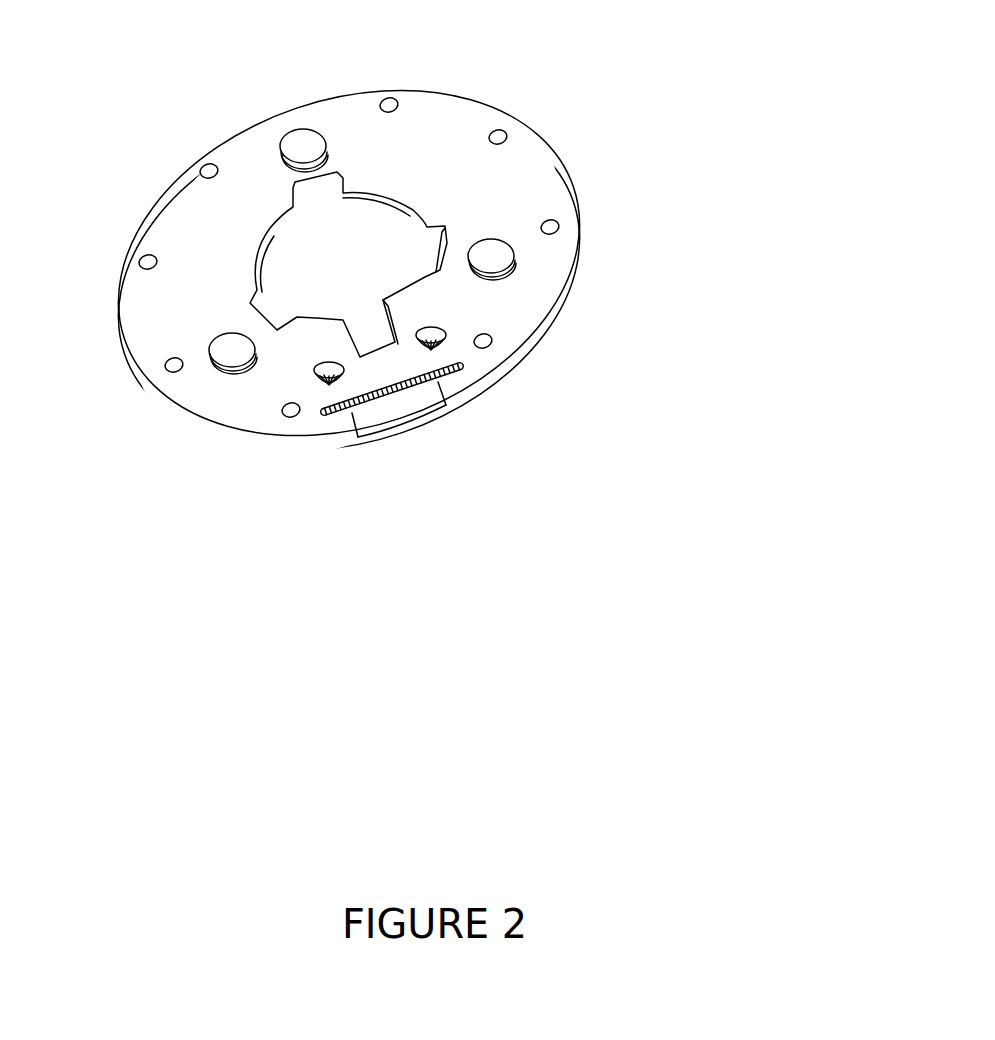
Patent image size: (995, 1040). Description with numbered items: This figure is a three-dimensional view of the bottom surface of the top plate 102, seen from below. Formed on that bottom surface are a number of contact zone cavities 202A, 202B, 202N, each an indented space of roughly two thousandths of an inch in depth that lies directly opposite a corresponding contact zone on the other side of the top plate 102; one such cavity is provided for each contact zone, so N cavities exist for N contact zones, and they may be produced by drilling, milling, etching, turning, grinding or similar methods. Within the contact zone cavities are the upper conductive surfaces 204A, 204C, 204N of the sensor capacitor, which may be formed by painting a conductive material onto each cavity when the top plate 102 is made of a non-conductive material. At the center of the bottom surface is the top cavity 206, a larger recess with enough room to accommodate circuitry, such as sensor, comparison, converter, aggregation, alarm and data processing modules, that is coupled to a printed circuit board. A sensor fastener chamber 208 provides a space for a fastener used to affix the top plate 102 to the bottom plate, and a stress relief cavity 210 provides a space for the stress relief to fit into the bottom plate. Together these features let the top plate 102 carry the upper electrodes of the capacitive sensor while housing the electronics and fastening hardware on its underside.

The top plate 102 is at (474, 702).
The contact zone cavity 202A is at (280, 150).
The contact zone cavity 202B is at (248, 363).
The contact zone cavity 202N is at (488, 261).
The upper conductive surface 204A is at (302, 145).
The upper conductive surface 204C is at (228, 352).
The upper conductive surface 204N is at (490, 260).
The top cavity 206 is at (397, 252).
The sensor fastener chamber 208 is at (432, 344).
The stress relief cavity 210 is at (380, 393).